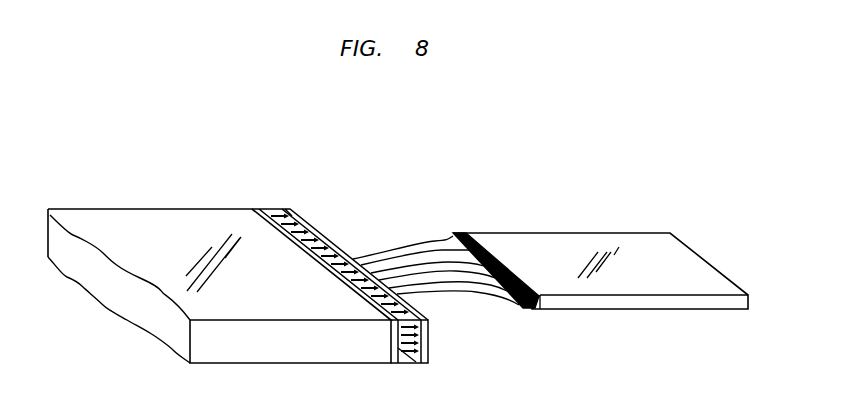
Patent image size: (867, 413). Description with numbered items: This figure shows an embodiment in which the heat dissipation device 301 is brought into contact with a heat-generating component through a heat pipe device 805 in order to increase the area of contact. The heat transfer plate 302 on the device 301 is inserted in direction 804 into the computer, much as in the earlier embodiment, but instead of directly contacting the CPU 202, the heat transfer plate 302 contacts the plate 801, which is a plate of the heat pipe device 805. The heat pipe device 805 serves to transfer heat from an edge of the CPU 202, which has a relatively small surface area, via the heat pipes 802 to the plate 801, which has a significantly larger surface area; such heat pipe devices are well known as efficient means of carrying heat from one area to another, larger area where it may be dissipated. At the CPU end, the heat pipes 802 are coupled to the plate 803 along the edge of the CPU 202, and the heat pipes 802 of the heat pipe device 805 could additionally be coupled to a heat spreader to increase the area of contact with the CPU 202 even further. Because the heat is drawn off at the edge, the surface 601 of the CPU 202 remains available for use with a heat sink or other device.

The heat dissipation device 301 is at (145, 159).
The heat transfer plate 302 is at (262, 207).
The plate 801 is at (312, 218).
The heat pipes 802 is at (418, 243).
The plate 803 is at (523, 308).
The direction 804 is at (415, 358).
The heat pipe device 805 is at (456, 318).
The CPU 202 is at (647, 232).
The surface 601 is at (713, 268).